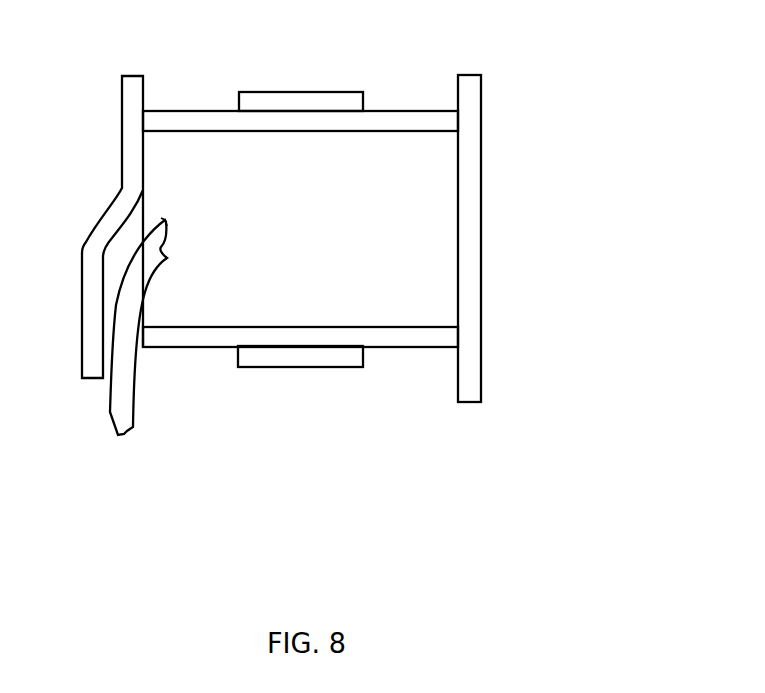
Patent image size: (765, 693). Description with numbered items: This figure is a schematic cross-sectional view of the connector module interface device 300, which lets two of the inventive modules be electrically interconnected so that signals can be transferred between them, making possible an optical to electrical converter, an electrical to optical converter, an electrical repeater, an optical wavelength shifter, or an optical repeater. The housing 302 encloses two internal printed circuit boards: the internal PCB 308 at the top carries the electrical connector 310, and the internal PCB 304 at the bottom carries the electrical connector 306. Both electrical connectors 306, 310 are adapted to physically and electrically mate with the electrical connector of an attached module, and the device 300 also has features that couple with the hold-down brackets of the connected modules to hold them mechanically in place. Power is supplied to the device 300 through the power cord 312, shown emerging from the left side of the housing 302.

The connector module interface device 300 is at (345, 288).
The housing 302 is at (481, 263).
The internal PCB 304 is at (427, 346).
The electrical connector 306 is at (272, 367).
The internal PCB 308 is at (198, 113).
The electrical connector 310 is at (327, 111).
The power cord 312 is at (132, 407).